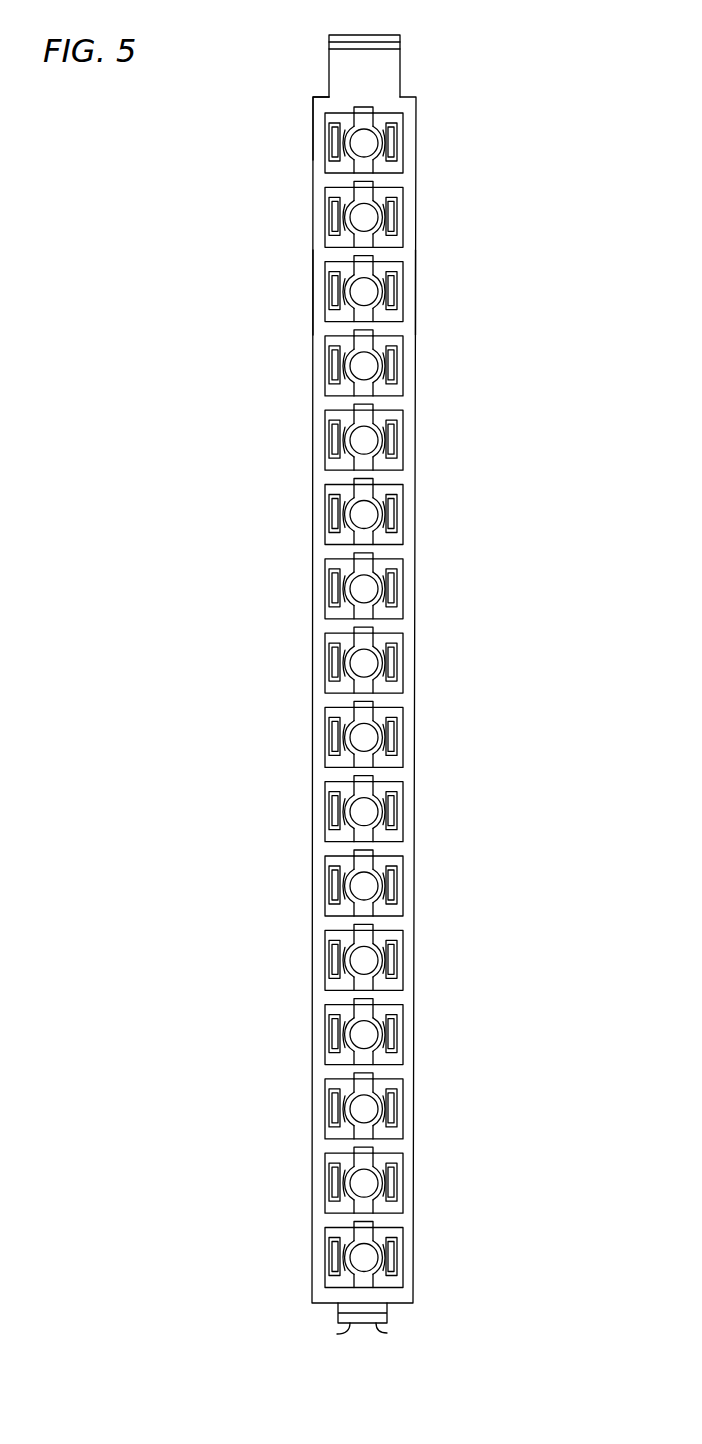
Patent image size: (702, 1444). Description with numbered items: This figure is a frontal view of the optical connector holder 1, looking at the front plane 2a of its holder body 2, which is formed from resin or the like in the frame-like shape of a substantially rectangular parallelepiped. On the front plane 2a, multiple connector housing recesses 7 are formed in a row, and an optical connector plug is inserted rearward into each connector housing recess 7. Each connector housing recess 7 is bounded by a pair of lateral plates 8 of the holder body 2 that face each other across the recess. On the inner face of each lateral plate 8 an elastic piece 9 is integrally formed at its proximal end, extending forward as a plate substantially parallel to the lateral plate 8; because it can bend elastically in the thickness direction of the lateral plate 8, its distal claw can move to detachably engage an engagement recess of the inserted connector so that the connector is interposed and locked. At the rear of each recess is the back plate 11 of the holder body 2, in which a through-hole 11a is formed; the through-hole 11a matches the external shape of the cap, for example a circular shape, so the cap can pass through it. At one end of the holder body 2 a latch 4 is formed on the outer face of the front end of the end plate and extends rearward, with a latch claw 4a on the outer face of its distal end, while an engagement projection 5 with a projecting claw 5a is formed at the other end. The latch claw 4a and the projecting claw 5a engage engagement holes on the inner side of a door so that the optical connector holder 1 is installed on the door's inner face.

The optical connector holder 1 is at (450, 153).
The holder body 2 is at (416, 125).
The front plane 2a is at (313, 107).
The latch 4 is at (401, 72).
The latch claw 4a is at (383, 35).
The engagement projection 5 is at (387, 1333).
The projecting claw 5a is at (337, 1334).
The connector housing recess 7 is at (345, 195).
The lateral plate 8 is at (313, 292).
The elastic piece 9 is at (451, 266).
The back plate 11 is at (430, 356).
The through-hole 11a is at (451, 379).